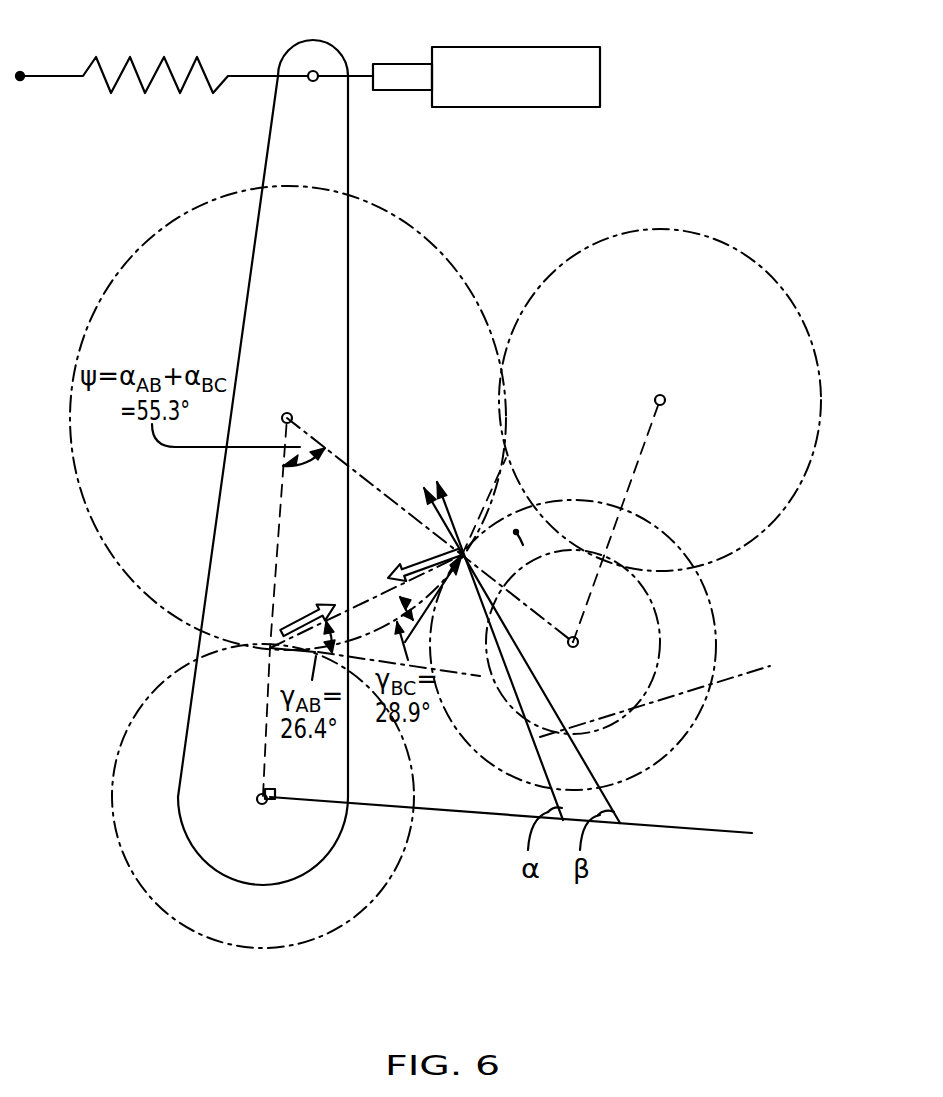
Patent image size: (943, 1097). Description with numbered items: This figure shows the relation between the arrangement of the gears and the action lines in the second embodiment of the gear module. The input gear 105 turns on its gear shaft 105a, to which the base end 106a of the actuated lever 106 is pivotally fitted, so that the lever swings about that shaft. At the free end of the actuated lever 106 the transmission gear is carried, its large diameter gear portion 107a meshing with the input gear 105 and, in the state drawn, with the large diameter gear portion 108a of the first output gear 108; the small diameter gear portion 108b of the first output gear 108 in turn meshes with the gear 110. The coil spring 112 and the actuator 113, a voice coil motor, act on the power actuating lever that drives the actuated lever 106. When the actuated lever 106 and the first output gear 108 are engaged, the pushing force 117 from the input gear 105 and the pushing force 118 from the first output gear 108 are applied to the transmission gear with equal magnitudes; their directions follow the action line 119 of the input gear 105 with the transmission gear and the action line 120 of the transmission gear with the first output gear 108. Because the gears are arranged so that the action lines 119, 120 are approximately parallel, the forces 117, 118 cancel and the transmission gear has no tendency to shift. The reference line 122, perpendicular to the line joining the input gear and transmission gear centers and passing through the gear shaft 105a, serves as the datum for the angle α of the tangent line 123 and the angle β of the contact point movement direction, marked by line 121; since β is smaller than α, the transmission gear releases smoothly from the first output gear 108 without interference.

The coil spring 112 is at (135, 60).
The actuator 113 is at (532, 55).
The large diameter gear portion 107a is at (395, 212).
The gear 110 is at (745, 248).
The action line 120 is at (565, 508).
The pushing force 118 is at (422, 557).
The pushing force 117 is at (290, 618).
The actuated lever 106 is at (240, 654).
The action line 119 is at (230, 672).
The gear shaft 105a is at (260, 804).
The base end 106a is at (318, 848).
The input gear 105 is at (313, 938).
The large diameter gear portion 108a is at (707, 590).
The small diameter gear portion 108b is at (703, 688).
The first output gear 108 is at (826, 612).
The tangent line 123 is at (535, 745).
The line of action 121 is at (580, 753).
The reference line 122 is at (466, 812).